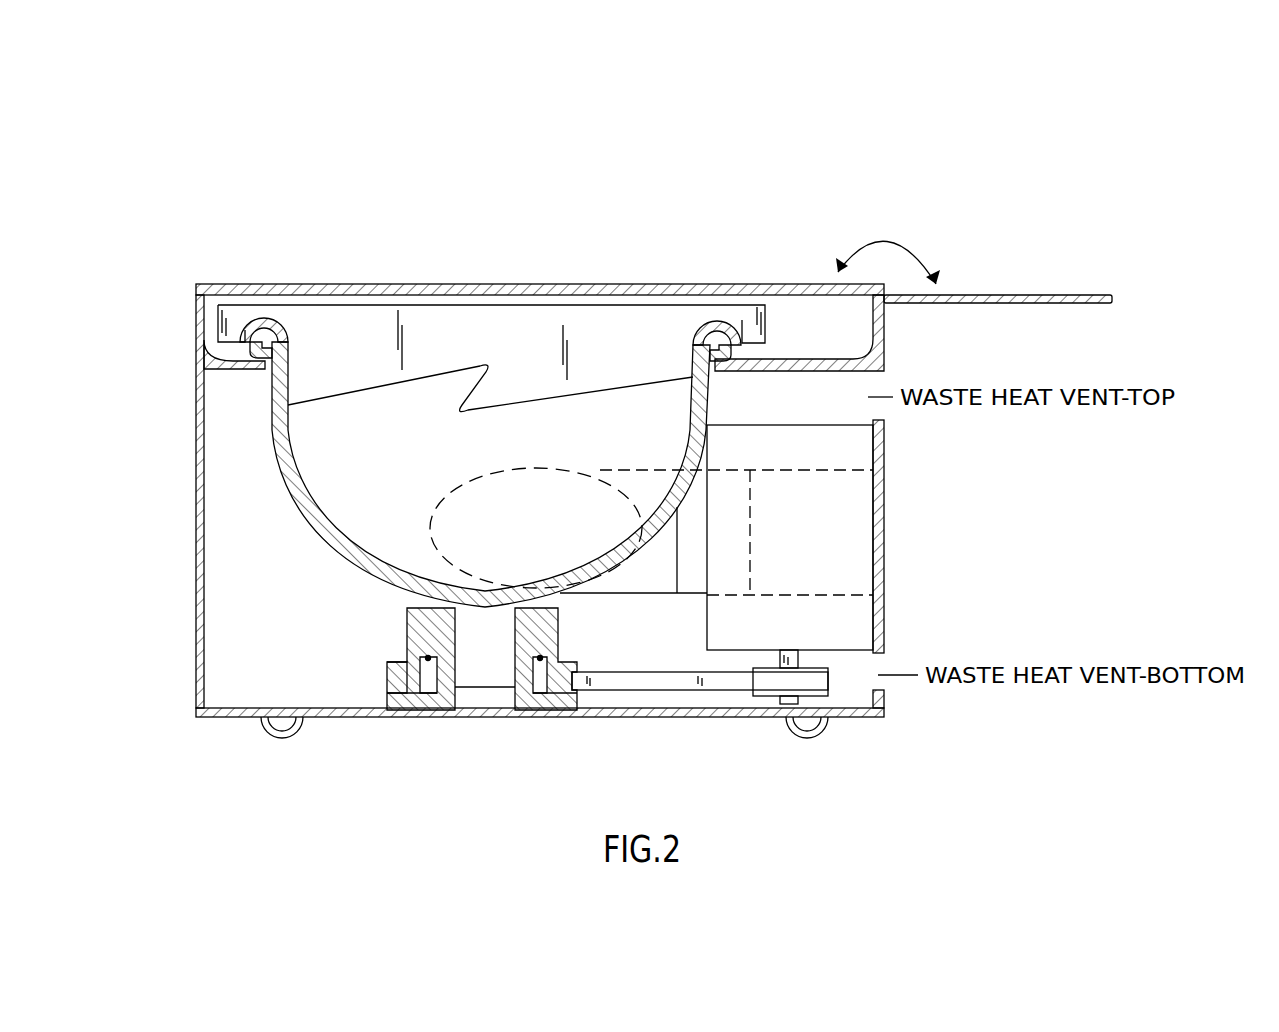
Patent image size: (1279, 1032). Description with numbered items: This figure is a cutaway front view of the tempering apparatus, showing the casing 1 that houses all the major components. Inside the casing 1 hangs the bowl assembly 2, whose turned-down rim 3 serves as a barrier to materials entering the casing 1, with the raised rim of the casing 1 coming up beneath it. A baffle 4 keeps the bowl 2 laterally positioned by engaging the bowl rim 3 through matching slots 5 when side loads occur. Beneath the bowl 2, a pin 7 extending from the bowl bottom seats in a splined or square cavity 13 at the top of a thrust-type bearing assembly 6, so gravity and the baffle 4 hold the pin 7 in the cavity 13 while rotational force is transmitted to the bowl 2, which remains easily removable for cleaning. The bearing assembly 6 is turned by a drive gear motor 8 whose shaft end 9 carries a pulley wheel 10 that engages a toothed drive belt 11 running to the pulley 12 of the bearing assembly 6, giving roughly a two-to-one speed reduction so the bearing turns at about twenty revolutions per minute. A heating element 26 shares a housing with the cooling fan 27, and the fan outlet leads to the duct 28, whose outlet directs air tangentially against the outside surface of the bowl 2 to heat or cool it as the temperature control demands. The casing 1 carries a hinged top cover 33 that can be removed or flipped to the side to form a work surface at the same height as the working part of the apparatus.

The casing 1 is at (197, 536).
The bowl assembly 2 is at (287, 438).
The rim 3 is at (243, 327).
The baffle 4 is at (530, 327).
The matching slots 5 is at (275, 325).
The bearing assembly 6 is at (407, 704).
The pin 7 is at (488, 677).
The drive gear motor 8 is at (863, 619).
The shaft end 9 is at (800, 697).
The pulley wheel 10 is at (768, 696).
The toothed drive belt 11 is at (680, 698).
The pulley 12 is at (398, 682).
The cavity 13 is at (508, 702).
The heating element 26 is at (714, 534).
The cooling fan 27 is at (792, 534).
The duct 28 is at (606, 473).
The top cover 33 is at (1026, 296).